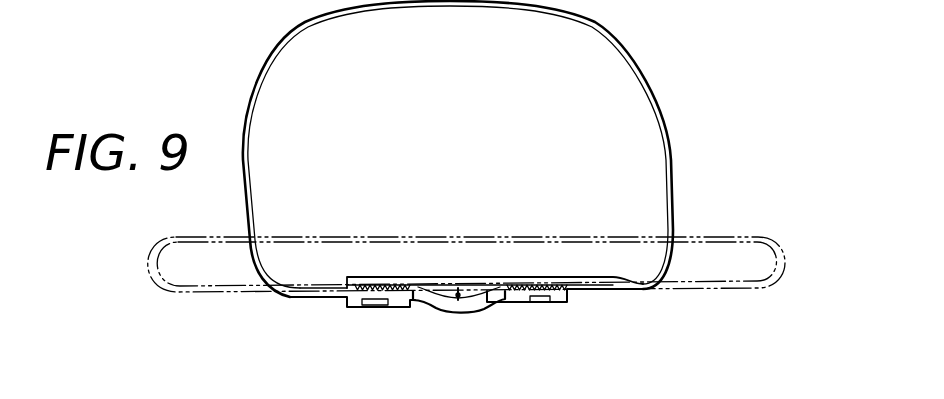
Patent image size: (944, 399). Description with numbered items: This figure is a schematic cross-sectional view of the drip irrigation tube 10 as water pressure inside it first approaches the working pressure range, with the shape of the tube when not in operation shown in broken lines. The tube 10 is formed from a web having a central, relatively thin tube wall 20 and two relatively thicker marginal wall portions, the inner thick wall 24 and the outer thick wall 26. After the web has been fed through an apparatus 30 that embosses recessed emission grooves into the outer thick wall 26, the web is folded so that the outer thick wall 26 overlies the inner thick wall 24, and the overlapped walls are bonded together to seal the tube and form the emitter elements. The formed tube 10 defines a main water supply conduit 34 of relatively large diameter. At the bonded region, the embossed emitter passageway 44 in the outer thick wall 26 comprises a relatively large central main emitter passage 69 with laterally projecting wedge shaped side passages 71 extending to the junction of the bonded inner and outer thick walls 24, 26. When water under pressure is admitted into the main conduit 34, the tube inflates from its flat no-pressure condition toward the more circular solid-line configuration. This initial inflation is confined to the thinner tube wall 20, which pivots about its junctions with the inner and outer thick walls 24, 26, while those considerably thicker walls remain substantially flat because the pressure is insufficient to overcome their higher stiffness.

The drip irrigation tube 10 is at (676, 45).
The tube wall 20 is at (668, 137).
The main water supply conduit 34 is at (471, 153).
The apparatus 30 is at (747, 236).
The inner thick wall 24 is at (537, 279).
The outer thick wall 26 is at (321, 300).
The wedge shaped side passages 71 is at (421, 304).
The central main emitter passage 69 is at (435, 305).
The emitter passageway 44 is at (455, 303).